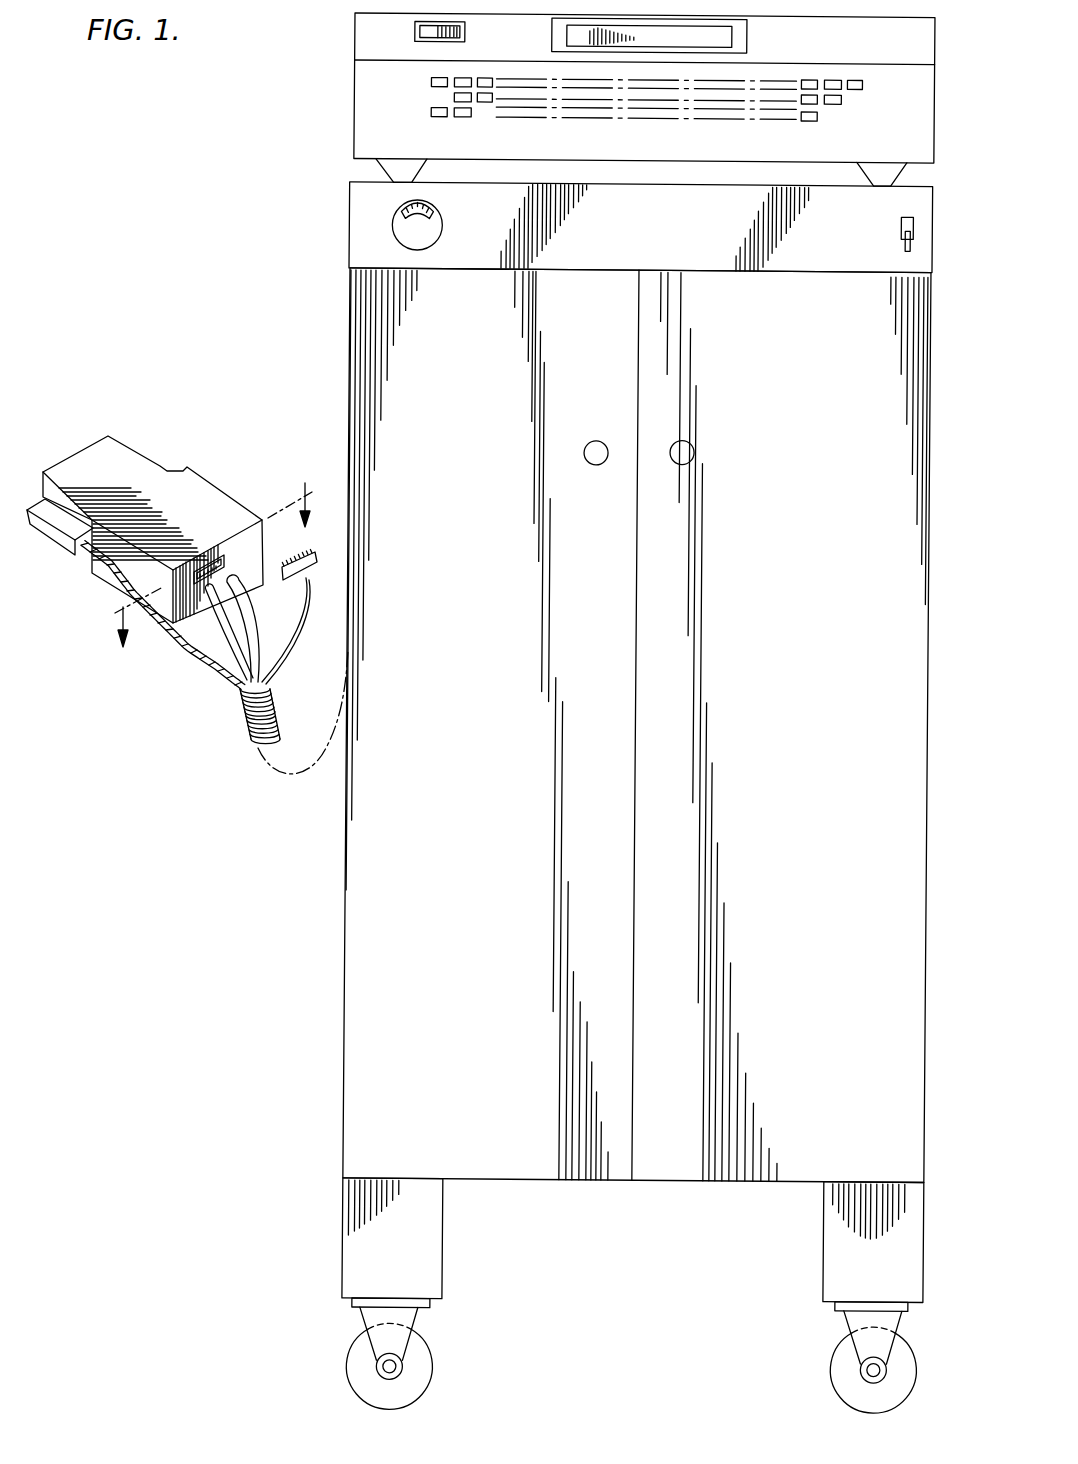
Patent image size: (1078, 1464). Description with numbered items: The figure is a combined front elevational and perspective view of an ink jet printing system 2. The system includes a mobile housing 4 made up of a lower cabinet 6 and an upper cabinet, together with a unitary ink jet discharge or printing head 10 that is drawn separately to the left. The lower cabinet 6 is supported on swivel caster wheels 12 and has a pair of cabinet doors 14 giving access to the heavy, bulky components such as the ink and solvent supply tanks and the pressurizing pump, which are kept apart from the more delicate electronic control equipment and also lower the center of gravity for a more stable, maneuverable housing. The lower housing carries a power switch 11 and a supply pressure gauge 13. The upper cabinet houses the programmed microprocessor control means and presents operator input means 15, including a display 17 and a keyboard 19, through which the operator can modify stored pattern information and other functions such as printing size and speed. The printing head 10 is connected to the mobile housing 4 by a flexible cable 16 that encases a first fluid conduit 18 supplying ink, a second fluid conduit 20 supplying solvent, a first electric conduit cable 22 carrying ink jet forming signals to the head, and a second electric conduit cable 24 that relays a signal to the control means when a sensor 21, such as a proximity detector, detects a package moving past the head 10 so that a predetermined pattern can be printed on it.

The ink jet printing system 2 is at (187, 560).
The mobile housing 4 is at (607, 205).
The lower cabinet 6 is at (614, 841).
The unitary ink jet discharge or printing head 10 is at (210, 500).
The power switch 11 is at (903, 220).
The swivel caster wheels 12 is at (438, 1362).
The supply pressure gauge 13 is at (443, 230).
The cabinet doors 14 is at (522, 1015).
The operator input means 15 is at (644, 100).
The flexible cable 16 is at (267, 722).
The display 17 is at (725, 30).
The first fluid conduit 18 is at (222, 618).
The keyboard 19 is at (880, 107).
The second fluid conduit 20 is at (258, 626).
The sensor 21 is at (48, 540).
The first electric conduit cable 22 is at (308, 578).
The second electric conduit cable 24 is at (187, 651).